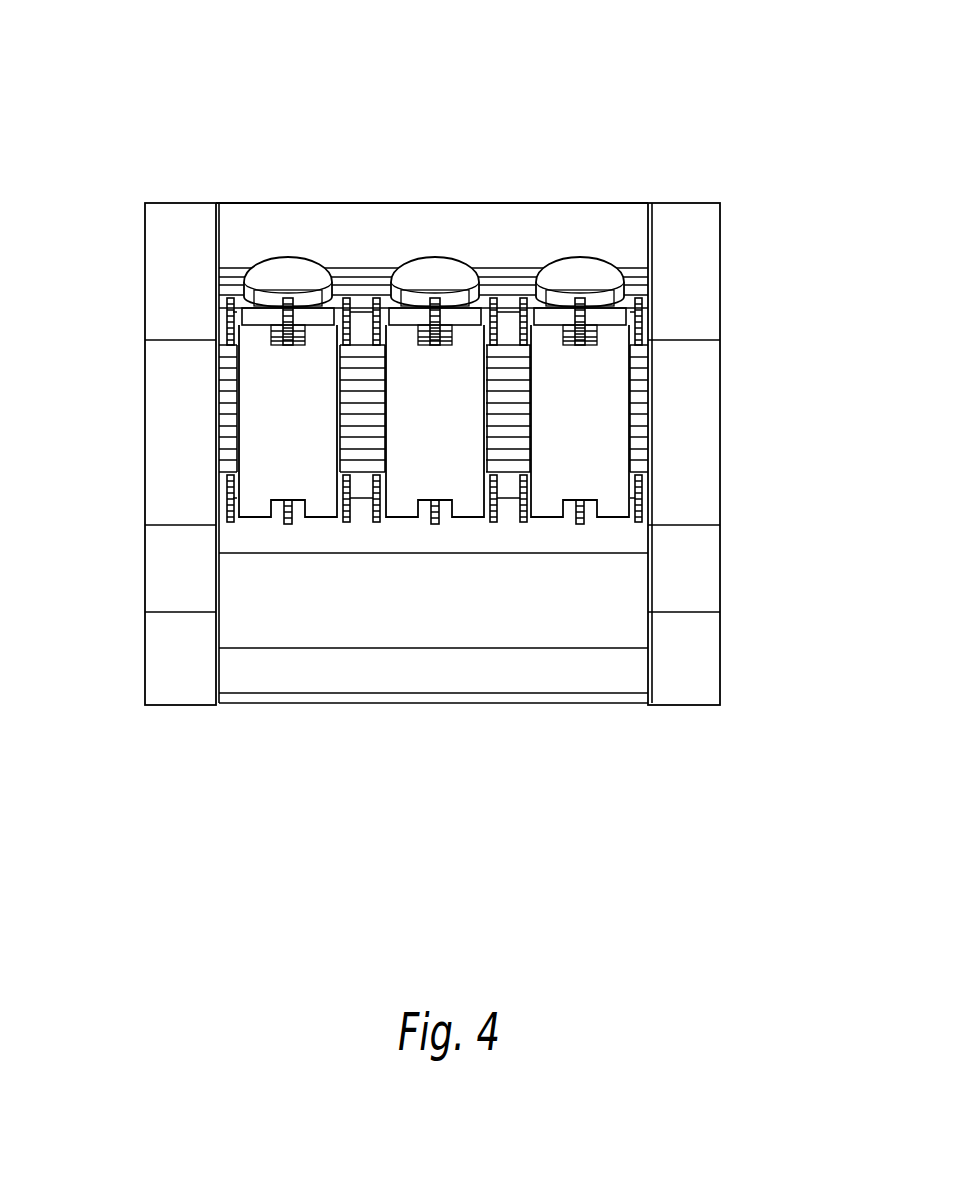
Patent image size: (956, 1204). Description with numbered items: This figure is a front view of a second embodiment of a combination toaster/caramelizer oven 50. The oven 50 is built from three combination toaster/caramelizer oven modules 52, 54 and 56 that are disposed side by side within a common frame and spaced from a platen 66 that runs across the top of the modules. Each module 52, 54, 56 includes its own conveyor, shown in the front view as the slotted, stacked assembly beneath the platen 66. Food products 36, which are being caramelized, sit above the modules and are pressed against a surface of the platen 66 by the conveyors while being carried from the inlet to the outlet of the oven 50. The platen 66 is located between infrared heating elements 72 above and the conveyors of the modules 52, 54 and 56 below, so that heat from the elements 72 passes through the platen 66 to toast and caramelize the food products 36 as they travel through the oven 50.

The combination toaster/caramelizer oven 50 is at (229, 142).
The platen 66 is at (349, 270).
The food products 36 is at (592, 262).
The infrared heating elements 72 is at (513, 428).
The combination toaster/caramelizer oven module 56 is at (292, 437).
The combination toaster/caramelizer oven module 54 is at (440, 453).
The combination toaster/caramelizer oven module 52 is at (597, 460).